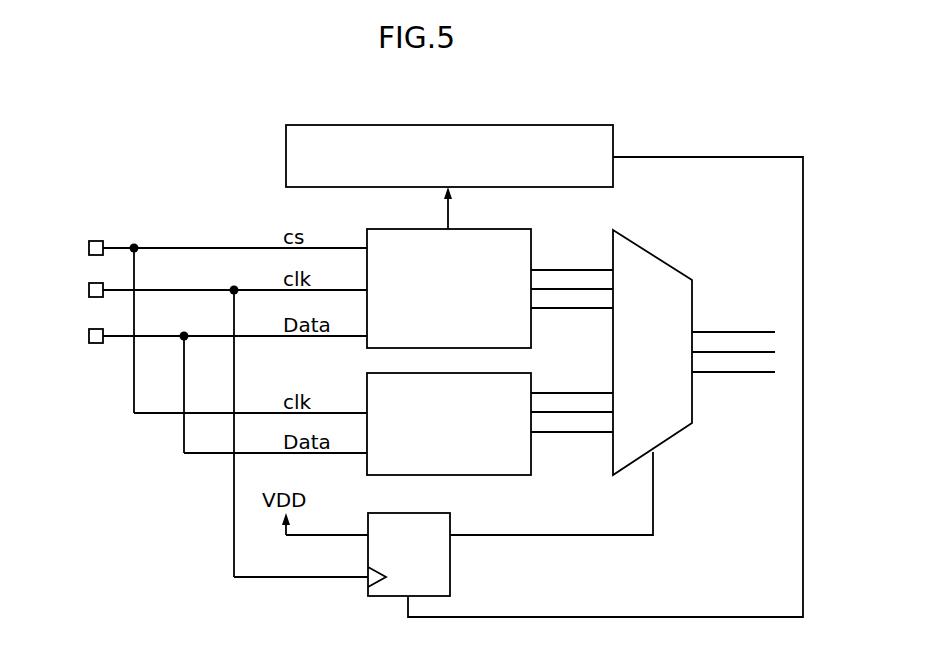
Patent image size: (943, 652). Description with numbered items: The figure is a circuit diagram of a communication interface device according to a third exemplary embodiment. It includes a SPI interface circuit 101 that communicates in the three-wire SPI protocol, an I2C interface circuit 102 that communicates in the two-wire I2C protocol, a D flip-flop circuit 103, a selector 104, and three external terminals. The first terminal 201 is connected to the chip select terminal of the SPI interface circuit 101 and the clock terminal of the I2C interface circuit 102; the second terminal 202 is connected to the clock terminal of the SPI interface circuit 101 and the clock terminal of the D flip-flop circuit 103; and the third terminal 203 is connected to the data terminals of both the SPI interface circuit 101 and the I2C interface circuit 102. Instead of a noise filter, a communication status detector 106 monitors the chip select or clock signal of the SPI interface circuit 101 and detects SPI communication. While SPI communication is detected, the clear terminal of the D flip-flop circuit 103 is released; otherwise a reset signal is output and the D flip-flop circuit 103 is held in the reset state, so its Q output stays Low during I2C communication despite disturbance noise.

The SPI interface circuit 101 is at (522, 229).
The I2C interface circuit 102 is at (527, 373).
The D flip-flop circuit 103 is at (450, 523).
The selector 104 is at (671, 265).
The communication status detector 106 is at (456, 125).
The first terminal 201 is at (89, 245).
The second terminal 202 is at (89, 287).
The third terminal 203 is at (89, 333).